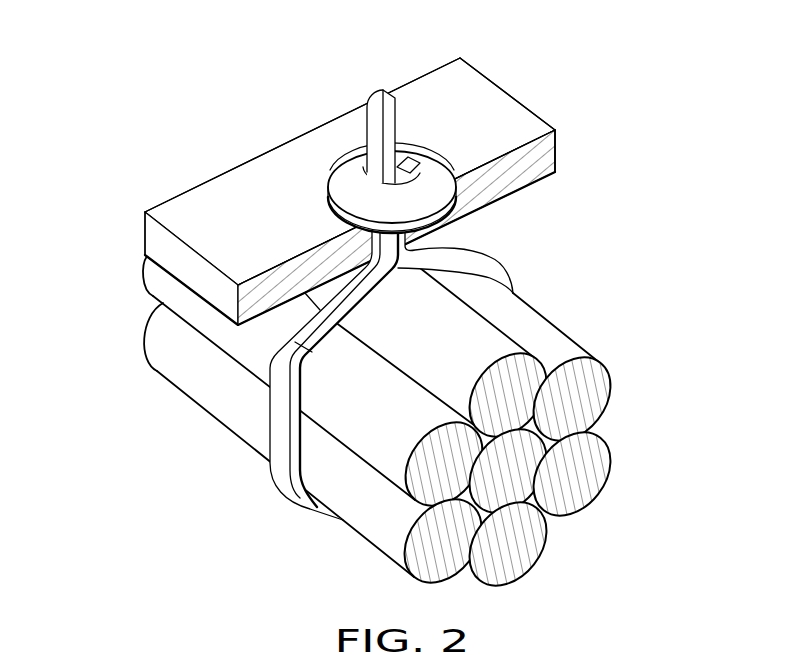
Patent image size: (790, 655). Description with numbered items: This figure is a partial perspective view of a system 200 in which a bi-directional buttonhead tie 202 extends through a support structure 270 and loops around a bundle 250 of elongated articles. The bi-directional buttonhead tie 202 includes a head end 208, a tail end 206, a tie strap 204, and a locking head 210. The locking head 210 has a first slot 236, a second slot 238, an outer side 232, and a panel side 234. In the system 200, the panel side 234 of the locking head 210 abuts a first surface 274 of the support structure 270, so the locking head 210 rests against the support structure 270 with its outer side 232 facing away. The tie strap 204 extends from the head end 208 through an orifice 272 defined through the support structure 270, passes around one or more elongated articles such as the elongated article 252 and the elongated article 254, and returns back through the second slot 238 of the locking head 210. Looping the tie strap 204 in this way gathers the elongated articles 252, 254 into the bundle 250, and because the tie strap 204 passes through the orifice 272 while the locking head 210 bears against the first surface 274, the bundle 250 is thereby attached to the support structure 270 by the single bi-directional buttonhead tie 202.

The system 200 is at (152, 74).
The bi-directional buttonhead tie 202 is at (305, 204).
The tie strap 204 is at (282, 426).
The tail end 206 is at (383, 97).
The head end 208 is at (376, 142).
The locking head 210 is at (430, 163).
The outer side 232 is at (330, 237).
The panel side 234 is at (180, 195).
The first slot 236 is at (407, 163).
The second slot 238 is at (347, 195).
The bundle 250 is at (433, 442).
The elongated article 252 is at (600, 452).
The elongated article 254 is at (447, 562).
The support structure 270 is at (371, 164).
The orifice 272 is at (373, 262).
The first surface 274 is at (443, 80).